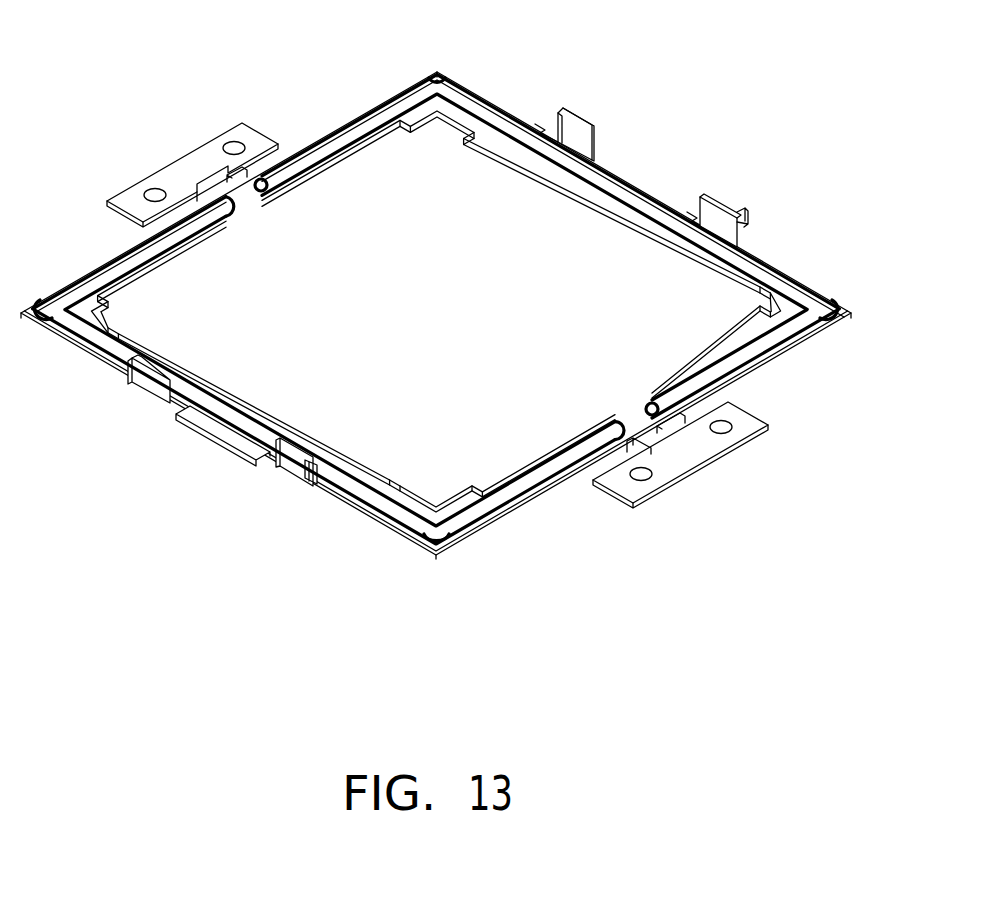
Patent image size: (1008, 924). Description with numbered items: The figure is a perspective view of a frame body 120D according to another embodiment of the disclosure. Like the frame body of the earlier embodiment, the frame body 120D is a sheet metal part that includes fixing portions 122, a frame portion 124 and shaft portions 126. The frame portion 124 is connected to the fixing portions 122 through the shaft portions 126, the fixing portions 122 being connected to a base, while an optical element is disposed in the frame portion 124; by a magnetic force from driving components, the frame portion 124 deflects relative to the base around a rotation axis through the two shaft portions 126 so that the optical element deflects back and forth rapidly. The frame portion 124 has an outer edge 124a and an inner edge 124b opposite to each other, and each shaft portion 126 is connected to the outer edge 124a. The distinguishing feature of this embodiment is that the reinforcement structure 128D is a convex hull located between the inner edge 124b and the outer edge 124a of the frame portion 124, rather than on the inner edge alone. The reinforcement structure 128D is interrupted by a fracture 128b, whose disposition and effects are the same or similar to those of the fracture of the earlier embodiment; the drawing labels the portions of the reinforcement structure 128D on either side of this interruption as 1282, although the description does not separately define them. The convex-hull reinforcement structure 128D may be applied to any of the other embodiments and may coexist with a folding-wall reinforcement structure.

The frame body 120D is at (463, 375).
The fixing portion 122 is at (192, 165).
The frame portion 124 is at (463, 397).
The outer edge 124a is at (792, 365).
The inner edge 124b is at (717, 353).
The shaft portion 126 is at (222, 193).
The reinforcement structure 128D is at (436, 358).
The gasket segment 1282 is at (322, 152).
The fracture 128b is at (233, 194).